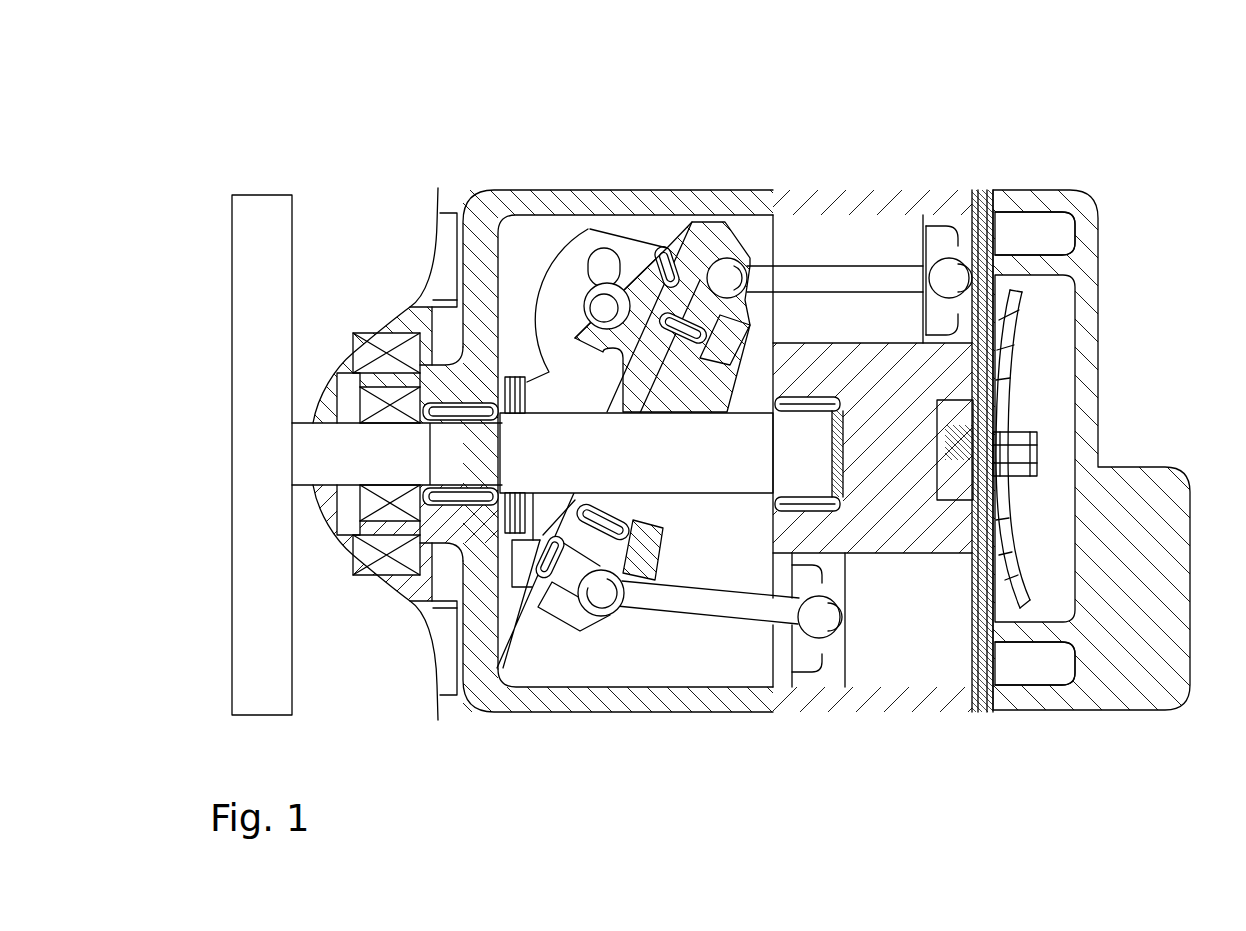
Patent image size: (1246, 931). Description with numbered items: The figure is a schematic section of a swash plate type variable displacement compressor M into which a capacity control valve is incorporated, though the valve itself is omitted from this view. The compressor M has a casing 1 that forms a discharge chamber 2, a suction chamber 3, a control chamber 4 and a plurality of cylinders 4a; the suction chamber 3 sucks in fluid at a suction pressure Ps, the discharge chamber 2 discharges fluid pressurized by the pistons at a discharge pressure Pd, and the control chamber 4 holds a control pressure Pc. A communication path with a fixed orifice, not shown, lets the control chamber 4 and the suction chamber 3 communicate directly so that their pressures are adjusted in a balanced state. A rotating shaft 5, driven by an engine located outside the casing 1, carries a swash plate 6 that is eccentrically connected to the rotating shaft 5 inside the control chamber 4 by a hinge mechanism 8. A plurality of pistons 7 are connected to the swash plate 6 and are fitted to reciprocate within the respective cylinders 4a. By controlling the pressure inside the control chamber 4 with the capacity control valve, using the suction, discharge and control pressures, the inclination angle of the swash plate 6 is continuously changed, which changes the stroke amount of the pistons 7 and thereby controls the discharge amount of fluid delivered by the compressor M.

The variable displacement compressor M is at (711, 423).
The casing 1 is at (508, 182).
The discharge chamber 2 is at (1048, 373).
The suction chamber 3 is at (1062, 233).
The control chamber 4 is at (693, 713).
The cylinders 4a is at (842, 228).
The rotating shaft 5 is at (530, 458).
The swash plate 6 is at (688, 340).
The pistons 7 is at (950, 225).
The hinge mechanism 8 is at (545, 365).